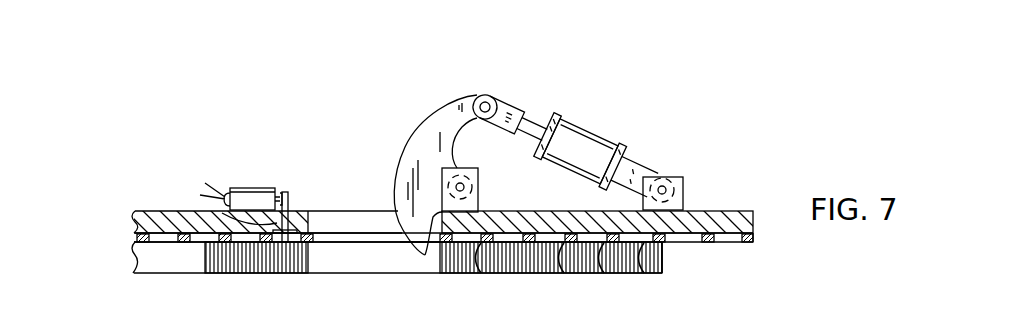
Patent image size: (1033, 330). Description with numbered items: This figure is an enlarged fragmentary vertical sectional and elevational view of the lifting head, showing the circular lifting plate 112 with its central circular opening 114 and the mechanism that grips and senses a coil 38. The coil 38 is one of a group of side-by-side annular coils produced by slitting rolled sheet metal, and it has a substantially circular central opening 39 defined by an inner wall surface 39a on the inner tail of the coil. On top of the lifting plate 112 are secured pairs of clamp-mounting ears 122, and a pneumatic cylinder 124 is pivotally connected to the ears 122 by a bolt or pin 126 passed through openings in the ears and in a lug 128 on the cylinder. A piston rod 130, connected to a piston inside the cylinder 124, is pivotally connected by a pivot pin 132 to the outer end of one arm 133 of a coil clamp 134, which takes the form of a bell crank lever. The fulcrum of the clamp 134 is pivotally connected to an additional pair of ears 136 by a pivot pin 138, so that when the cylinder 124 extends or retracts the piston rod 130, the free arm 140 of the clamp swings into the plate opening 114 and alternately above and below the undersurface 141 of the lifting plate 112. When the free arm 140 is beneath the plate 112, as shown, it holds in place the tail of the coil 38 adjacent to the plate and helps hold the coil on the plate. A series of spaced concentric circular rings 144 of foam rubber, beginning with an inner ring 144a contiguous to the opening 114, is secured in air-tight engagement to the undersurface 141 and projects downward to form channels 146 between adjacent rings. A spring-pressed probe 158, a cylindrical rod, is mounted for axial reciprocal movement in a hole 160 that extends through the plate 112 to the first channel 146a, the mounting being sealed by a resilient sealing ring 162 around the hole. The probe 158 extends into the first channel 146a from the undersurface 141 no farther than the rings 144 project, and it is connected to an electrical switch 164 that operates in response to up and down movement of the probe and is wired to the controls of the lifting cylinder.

The coil 38 is at (663, 258).
The central opening 39 is at (318, 274).
The inner wall surface 39a is at (309, 250).
The lifting plate 112 is at (753, 222).
The central circular opening 114 is at (420, 249).
The clamp-mounting ears 122 is at (685, 190).
The pneumatic cylinder 124 is at (597, 133).
The bolt or pin 126 is at (668, 177).
The lug 128 is at (638, 160).
The piston rod 130 is at (533, 122).
The pivot pin 132 is at (490, 93).
The arm 133 is at (456, 97).
The coil clamp 134 is at (417, 115).
The ears 136 is at (478, 203).
The pivot pin 138 is at (461, 183).
The free arm 140 is at (395, 246).
The undersurface 141 is at (160, 244).
The concentric circular rings 144 is at (227, 238).
The inner ring 144a is at (330, 225).
The channel 146 is at (640, 273).
The first channel 146a is at (478, 248).
The spring-pressed probe 158 is at (292, 212).
The hole 160 is at (222, 213).
The resilient sealing ring 162 is at (297, 222).
The electrical switch 164 is at (243, 187).